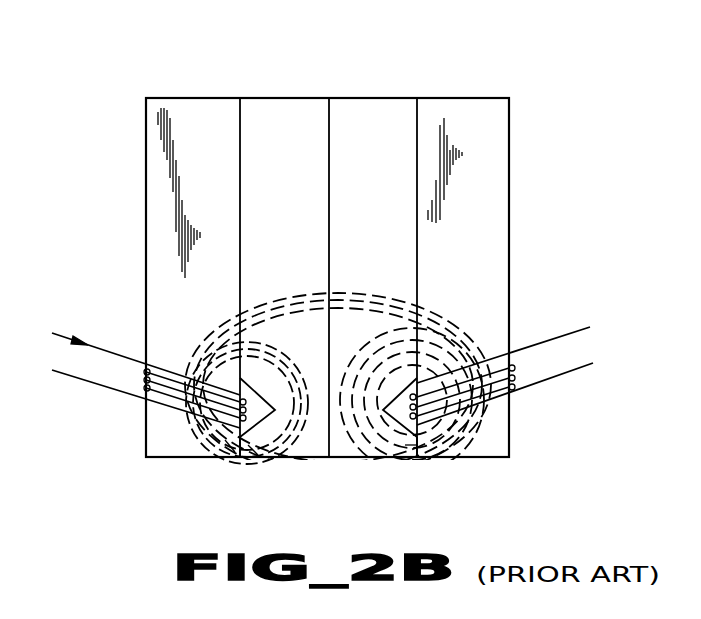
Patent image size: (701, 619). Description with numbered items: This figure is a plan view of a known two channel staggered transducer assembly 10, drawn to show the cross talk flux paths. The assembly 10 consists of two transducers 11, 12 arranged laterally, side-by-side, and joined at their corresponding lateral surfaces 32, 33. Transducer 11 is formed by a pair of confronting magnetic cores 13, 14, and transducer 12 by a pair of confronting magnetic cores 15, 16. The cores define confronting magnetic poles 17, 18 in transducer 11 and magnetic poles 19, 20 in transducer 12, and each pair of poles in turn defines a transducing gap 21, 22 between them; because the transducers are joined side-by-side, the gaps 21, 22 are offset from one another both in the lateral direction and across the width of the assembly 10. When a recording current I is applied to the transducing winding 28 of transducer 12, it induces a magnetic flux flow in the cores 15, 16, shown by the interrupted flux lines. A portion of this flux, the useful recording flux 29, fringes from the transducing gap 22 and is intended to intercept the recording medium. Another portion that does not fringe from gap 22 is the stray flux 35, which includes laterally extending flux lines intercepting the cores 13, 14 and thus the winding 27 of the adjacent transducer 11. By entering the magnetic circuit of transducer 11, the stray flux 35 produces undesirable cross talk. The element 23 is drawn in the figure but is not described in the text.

The transducer assembly 10 is at (154, 80).
The transducer 11 is at (509, 147).
The transducer 12 is at (146, 152).
The magnetic core 13 is at (460, 106).
The magnetic core 14 is at (392, 106).
The magnetic core 15 is at (306, 106).
The magnetic core 16 is at (212, 106).
The magnetic pole 17 is at (423, 447).
The magnetic pole 18 is at (415, 450).
The magnetic pole 19 is at (244, 452).
The magnetic pole 20 is at (238, 442).
The transducing gap 21 is at (418, 457).
The transducing gap 22 is at (247, 462).
The base wall 23 is at (481, 457).
The winding 27 is at (488, 383).
The transducing winding 28 is at (165, 383).
The useful recording flux 29 is at (236, 466).
The lateral surface 32 is at (328, 185).
The lateral surface 33 is at (330, 212).
The stray flux 35 is at (440, 268).